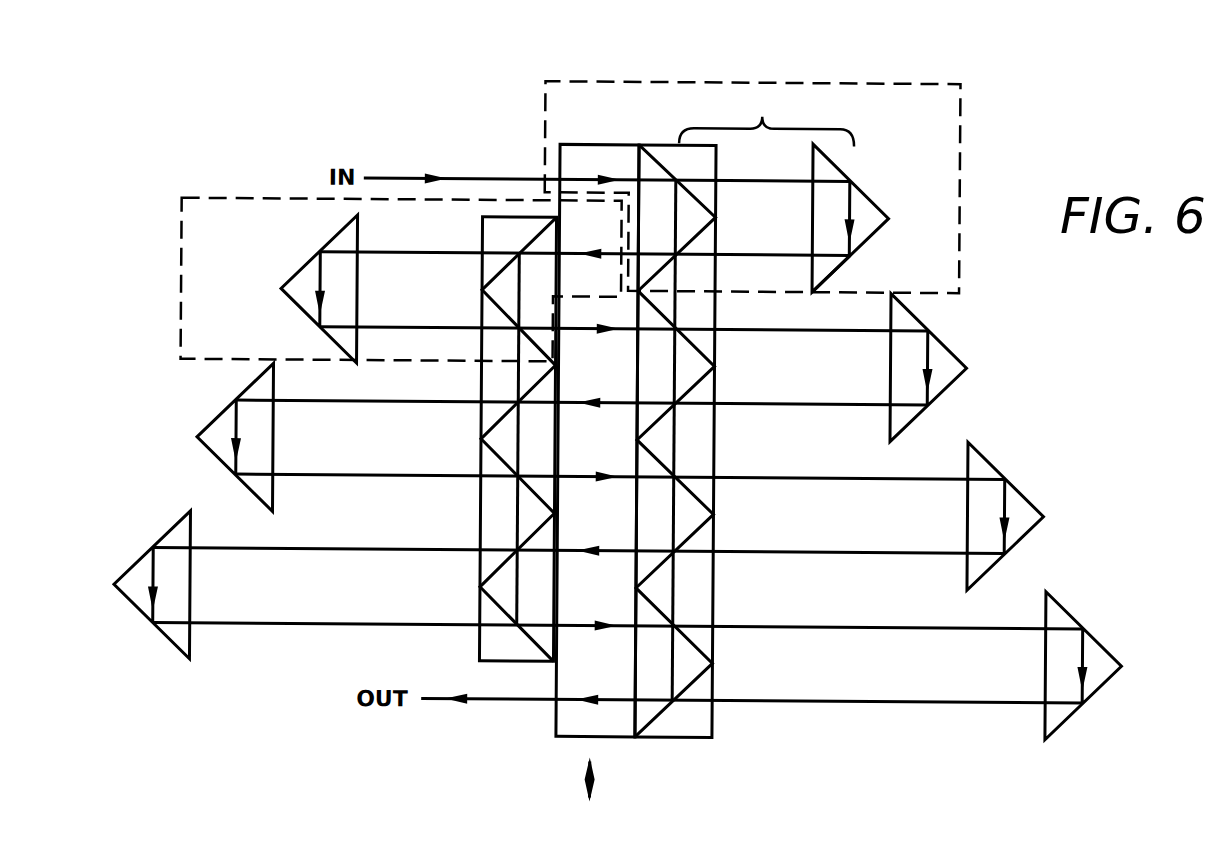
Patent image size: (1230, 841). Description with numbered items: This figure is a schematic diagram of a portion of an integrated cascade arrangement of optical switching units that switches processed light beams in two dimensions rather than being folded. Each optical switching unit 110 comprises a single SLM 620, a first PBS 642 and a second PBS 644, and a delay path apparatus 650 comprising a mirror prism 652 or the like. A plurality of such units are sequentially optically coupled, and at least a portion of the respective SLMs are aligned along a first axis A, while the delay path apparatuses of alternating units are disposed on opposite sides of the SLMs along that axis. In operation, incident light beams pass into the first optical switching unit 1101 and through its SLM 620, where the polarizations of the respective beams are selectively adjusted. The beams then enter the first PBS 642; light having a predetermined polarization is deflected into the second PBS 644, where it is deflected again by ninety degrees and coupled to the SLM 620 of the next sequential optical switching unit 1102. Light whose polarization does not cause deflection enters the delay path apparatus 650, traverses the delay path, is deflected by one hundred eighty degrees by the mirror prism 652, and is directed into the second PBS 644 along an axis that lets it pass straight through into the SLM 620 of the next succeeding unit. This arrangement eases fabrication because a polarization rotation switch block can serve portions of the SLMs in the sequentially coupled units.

The optical switching unit 110 is at (594, 196).
The first optical switching unit 1101 is at (907, 80).
The next sequential optical switching unit 1102 is at (297, 200).
The SLM 620 is at (588, 160).
The first PBS 642 is at (667, 158).
The second PBS 644 is at (780, 276).
The delay path apparatus 650 is at (766, 116).
The mirror prism 652 is at (857, 181).
The first axis A is at (586, 778).